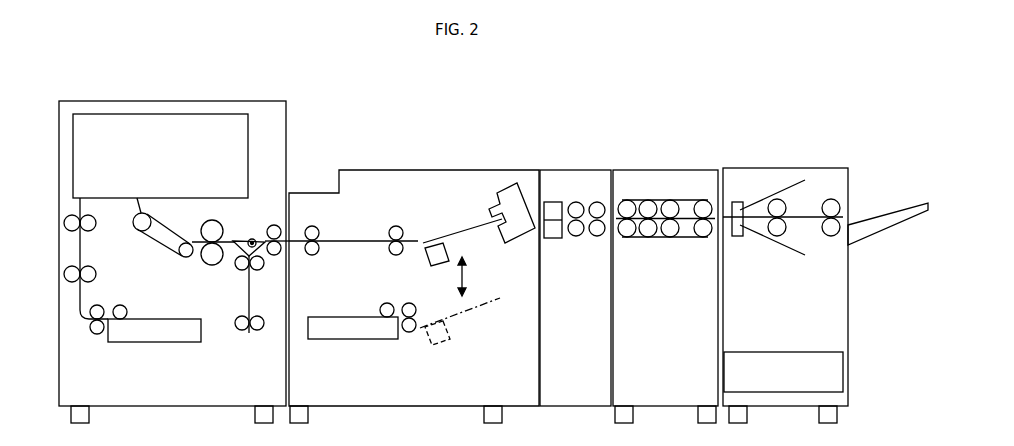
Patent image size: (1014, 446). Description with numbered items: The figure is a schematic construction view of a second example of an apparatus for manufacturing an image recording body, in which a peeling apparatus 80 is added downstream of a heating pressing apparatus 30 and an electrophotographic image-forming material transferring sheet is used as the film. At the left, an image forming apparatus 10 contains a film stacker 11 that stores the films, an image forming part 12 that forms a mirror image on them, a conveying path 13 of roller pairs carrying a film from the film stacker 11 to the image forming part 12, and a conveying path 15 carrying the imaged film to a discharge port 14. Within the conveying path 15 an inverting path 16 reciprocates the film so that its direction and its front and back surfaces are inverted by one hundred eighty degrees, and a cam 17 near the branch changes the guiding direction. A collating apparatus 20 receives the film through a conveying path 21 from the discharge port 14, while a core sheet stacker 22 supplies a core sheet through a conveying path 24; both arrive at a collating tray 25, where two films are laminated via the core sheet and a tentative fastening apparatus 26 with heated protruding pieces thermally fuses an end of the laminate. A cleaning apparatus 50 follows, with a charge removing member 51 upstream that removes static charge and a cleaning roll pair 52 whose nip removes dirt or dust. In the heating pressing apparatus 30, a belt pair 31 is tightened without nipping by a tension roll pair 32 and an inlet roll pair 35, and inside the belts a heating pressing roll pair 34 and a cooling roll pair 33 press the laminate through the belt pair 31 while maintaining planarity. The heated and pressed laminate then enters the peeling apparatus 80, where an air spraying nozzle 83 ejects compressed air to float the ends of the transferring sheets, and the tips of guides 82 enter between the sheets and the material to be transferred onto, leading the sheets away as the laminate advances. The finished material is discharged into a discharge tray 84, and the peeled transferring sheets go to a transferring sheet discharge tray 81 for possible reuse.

The image forming apparatus 10 is at (180, 85).
The film stacker 11 is at (150, 338).
The image forming part 12 is at (219, 116).
The conveying path 13 is at (71, 246).
The discharge port 14 is at (274, 225).
The conveying path 15 is at (162, 238).
The inverting path 16 is at (248, 298).
The cam 17 is at (253, 238).
The collating apparatus 20 is at (407, 141).
The conveying path 21 is at (352, 238).
The core sheet stacker 22 is at (357, 340).
The conveying path 24 is at (409, 303).
The collating tray 25 is at (460, 233).
The tentative fastening apparatus 26 is at (504, 188).
The heating pressing apparatus 30 is at (657, 140).
The belt pair 31 is at (690, 240).
The tension roll pair 32 is at (703, 240).
The cooling roll pair 33 is at (670, 240).
The heating pressing roll pair 34 is at (647, 240).
The inlet roll pair 35 is at (628, 240).
The cleaning apparatus 50 is at (568, 133).
The charge removing member 51 is at (553, 201).
The cleaning roll pair 52 is at (577, 201).
The peeling apparatus 80 is at (775, 140).
The transferring sheet discharge tray 81 is at (783, 350).
The guides 82 is at (760, 232).
The air spraying nozzle 83 is at (738, 240).
The discharge tray 84 is at (883, 216).